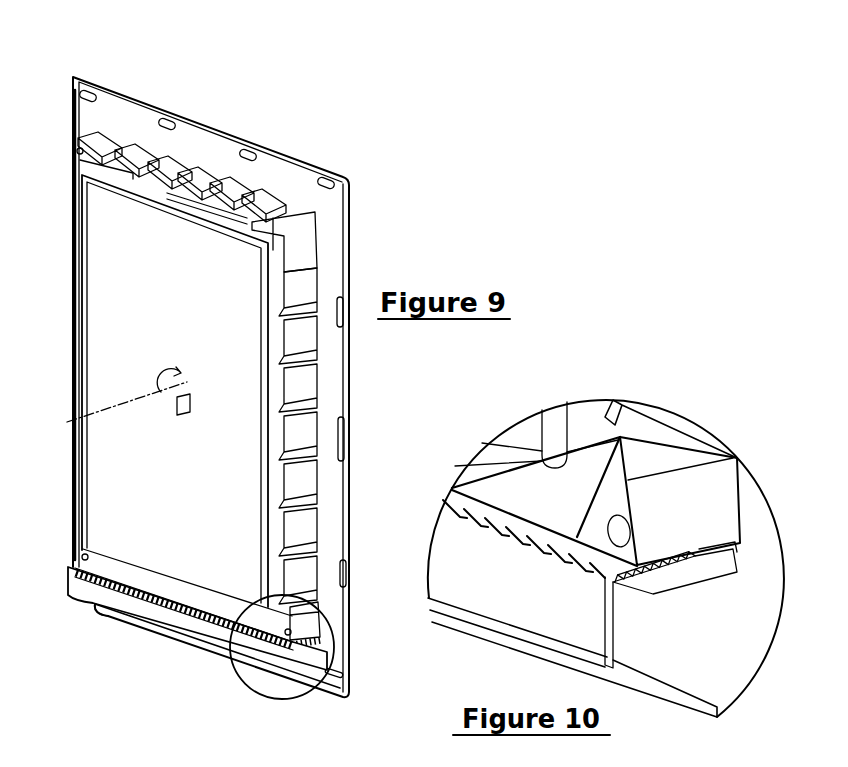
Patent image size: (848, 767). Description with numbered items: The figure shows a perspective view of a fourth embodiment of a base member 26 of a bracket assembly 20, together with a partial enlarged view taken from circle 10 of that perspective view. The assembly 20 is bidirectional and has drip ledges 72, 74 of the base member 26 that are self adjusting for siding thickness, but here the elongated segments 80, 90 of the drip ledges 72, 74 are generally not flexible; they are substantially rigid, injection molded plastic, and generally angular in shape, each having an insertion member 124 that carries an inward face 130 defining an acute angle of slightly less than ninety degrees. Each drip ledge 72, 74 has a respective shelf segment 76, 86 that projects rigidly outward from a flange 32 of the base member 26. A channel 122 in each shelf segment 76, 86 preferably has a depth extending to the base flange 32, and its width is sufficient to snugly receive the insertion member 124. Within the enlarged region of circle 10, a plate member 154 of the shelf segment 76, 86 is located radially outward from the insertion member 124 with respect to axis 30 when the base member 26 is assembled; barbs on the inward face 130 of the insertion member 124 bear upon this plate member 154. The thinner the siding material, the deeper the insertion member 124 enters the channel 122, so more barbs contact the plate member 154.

In FIG. 9, the assembly 20 is at (305, 84).
In FIG. 9, the base member 26 is at (361, 157).
In FIG. 9, the flange 32 is at (332, 237).
In FIG. 10, the flange 32 is at (755, 583).
In FIG. 9, the shelf segment 76 is at (73, 318).
In FIG. 9, the axis 30 is at (122, 418).
In FIG. 9, the shelf segment 86 is at (200, 598).
In FIG. 10, the shelf segment 86 is at (483, 482).
In FIG. 9, the elongated segment 80 is at (148, 606).
In FIG. 9, the elongated segment 90 is at (156, 614).
In FIG. 9, the drip ledge 72 is at (200, 631).
In FIG. 9, the drip ledge 74 is at (205, 649).
In FIG. 9, the circle 10 is at (253, 691).
In FIG. 10, the insertion member 124 is at (667, 563).
In FIG. 10, the plate member 154 is at (680, 580).
In FIG. 10, the channel 122 is at (707, 557).
In FIG. 10, the inward face 130 is at (612, 645).